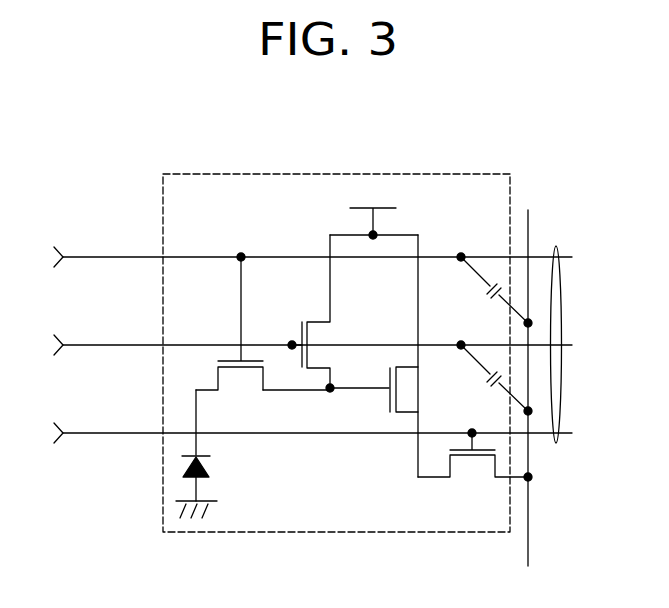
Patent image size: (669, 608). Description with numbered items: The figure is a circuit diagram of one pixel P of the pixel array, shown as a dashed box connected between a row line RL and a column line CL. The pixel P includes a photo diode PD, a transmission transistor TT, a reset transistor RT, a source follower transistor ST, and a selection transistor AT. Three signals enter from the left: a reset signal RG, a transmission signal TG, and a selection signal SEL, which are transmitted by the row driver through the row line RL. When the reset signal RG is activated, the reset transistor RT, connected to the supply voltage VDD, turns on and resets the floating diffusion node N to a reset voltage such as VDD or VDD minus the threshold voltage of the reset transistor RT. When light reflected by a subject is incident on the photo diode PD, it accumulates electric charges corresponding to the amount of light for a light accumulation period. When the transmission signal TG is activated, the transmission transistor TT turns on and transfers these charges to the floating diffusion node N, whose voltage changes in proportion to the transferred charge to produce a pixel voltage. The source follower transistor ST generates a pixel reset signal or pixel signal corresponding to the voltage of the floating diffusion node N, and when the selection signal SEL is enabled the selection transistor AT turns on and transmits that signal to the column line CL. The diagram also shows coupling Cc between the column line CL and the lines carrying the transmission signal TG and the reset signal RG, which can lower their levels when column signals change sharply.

The pixel P is at (471, 172).
The transmission signal TG is at (299, 257).
The reset signal RG is at (298, 345).
The selection signal SEL is at (294, 434).
The reset voltage VDD is at (374, 209).
The reset transistor RT is at (326, 311).
The floating diffusion node N is at (326, 402).
The source follower transistor ST is at (410, 356).
The transmission transistor TT is at (229, 331).
The photo diode PD is at (209, 454).
The selection transistor AT is at (475, 464).
The coupling Cc is at (496, 336).
The column line CL is at (530, 524).
The row line RL is at (556, 247).